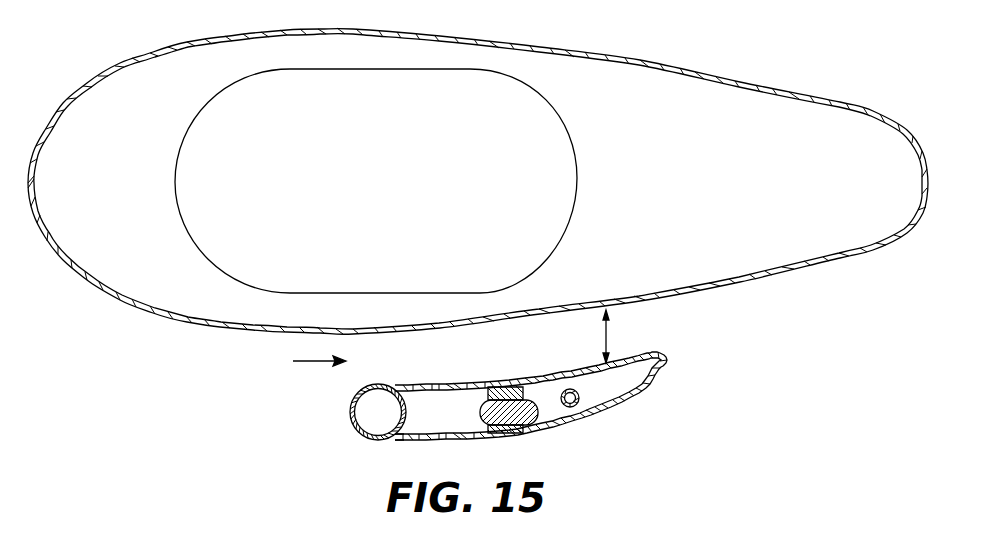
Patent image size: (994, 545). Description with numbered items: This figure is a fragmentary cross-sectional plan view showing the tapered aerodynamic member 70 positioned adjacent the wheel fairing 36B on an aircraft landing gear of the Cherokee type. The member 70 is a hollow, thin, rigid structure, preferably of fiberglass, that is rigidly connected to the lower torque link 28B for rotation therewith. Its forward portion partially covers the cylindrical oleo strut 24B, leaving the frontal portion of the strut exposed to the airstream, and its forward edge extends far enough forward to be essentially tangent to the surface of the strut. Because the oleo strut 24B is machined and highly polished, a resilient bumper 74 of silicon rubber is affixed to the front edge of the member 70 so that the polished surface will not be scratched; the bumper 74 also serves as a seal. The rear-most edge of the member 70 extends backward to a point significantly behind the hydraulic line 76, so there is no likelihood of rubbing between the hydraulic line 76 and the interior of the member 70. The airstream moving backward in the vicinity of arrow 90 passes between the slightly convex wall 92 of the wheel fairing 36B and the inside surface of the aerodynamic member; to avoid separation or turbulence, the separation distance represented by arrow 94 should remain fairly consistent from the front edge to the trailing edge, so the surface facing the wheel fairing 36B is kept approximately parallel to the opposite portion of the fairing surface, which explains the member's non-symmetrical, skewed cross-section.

The wheel fairing 36B is at (791, 92).
The slightly convex wall 92 is at (468, 327).
The arrow representing separation distance 94 is at (608, 331).
The arrow indicating airstream direction 90 is at (301, 362).
The oleo strut 24B is at (373, 441).
The resilient bumper 74 is at (402, 438).
The hydraulic line 76 is at (573, 389).
The lower torque link 28B is at (516, 414).
The first member 70 is at (627, 395).